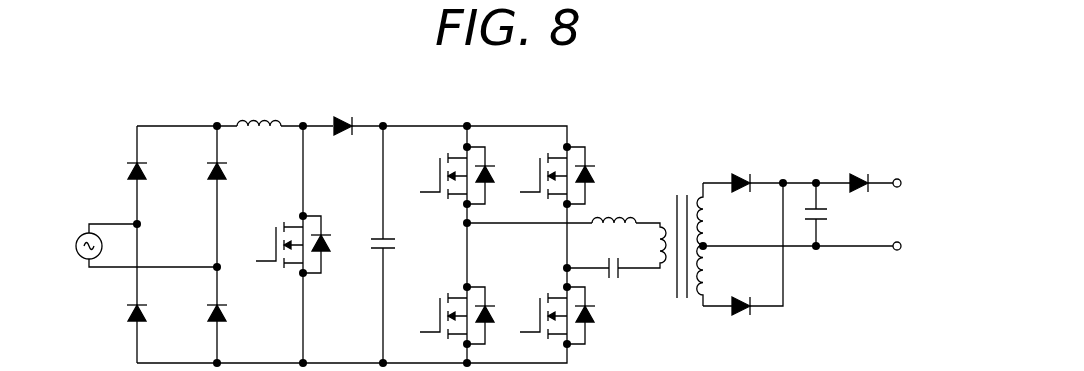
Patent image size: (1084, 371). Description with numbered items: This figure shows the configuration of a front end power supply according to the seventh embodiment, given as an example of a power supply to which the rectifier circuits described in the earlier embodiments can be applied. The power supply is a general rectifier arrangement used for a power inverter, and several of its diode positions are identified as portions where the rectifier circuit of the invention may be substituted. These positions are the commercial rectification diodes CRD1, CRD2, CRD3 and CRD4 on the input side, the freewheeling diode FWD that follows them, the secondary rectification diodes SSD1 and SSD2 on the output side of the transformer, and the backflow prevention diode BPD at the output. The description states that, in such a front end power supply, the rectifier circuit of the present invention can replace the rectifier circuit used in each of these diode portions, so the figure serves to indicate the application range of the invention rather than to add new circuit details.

The commercial rectification diode CRD1 is at (143, 178).
The commercial rectification diode CRD2 is at (223, 178).
The commercial rectification diode CRD3 is at (143, 319).
The commercial rectification diode CRD4 is at (223, 319).
The freewheeling diode FWD is at (333, 118).
The secondary rectification diode SSD1 is at (739, 191).
The secondary rectification diode SSD2 is at (739, 315).
The backflow prevention diode BPD is at (851, 177).